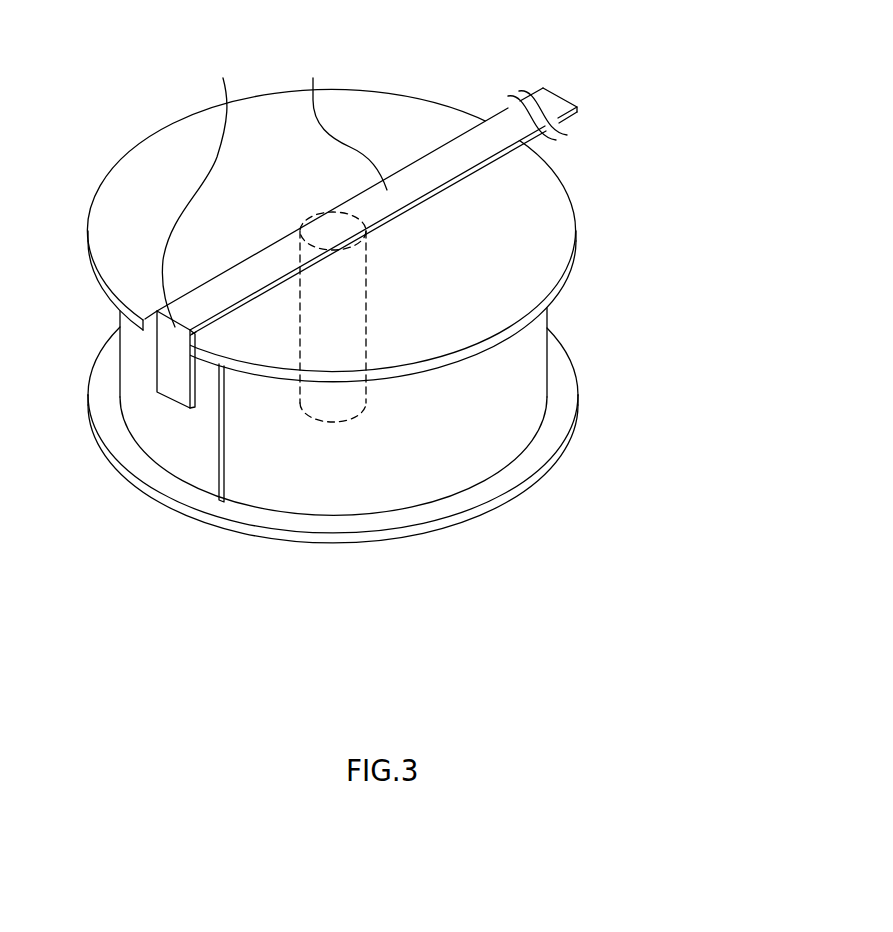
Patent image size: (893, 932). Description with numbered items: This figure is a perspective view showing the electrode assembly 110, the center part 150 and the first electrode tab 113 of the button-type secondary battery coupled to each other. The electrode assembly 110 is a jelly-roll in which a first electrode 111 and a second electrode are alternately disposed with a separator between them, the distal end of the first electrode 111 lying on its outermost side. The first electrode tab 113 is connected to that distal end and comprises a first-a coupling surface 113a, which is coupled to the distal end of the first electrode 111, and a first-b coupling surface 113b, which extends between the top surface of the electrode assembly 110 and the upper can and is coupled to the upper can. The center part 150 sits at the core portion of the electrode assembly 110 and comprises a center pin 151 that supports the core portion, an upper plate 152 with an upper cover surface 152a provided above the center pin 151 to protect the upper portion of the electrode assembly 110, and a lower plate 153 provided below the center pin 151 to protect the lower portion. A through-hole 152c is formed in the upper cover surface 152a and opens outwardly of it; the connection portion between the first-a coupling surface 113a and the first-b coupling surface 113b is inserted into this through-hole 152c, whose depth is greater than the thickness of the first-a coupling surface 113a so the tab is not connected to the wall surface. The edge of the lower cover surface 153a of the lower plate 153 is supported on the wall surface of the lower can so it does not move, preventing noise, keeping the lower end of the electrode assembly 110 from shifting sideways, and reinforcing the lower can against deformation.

The electrode assembly 110 is at (333, 321).
The first electrode 111 is at (208, 462).
The first electrode tab 113 is at (274, 166).
The first-a coupling surface 113a is at (207, 190).
The first-b coupling surface 113b is at (341, 121).
The center part 150 is at (413, 310).
The center pin 151 is at (368, 298).
The upper plate 152 is at (383, 240).
The upper cover surface 152a is at (540, 181).
The through-hole 152c is at (150, 327).
The lower plate 153 is at (412, 390).
The lower cover surface 153a is at (565, 371).